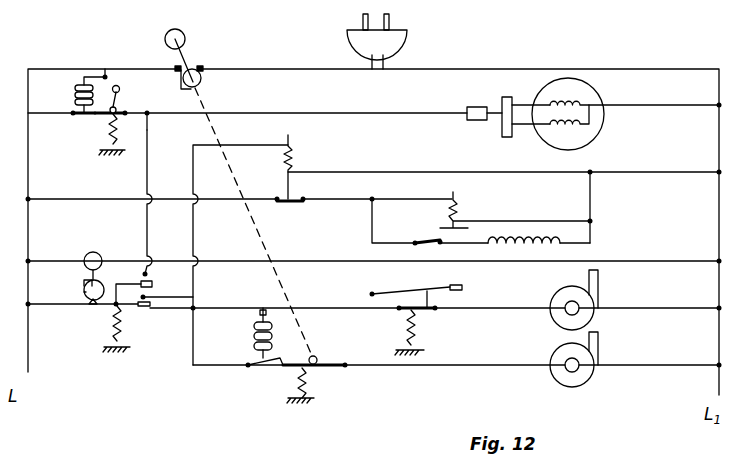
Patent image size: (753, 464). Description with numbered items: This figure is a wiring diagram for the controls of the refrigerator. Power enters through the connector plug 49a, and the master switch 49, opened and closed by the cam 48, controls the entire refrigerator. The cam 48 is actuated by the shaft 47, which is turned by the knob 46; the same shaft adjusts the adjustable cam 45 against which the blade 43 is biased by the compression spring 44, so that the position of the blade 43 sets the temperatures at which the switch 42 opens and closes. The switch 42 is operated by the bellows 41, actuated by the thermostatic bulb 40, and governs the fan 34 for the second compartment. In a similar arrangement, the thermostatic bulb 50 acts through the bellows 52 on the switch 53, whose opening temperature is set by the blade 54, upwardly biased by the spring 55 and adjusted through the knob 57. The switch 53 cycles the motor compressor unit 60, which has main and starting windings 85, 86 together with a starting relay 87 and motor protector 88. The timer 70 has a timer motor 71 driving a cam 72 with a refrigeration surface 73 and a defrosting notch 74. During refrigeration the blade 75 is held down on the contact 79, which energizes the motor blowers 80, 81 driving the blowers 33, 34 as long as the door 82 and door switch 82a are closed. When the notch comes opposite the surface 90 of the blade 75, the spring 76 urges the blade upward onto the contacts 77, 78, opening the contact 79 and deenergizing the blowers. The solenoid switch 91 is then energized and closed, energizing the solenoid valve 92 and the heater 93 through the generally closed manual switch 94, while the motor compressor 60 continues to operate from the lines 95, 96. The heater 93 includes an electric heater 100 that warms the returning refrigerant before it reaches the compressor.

The first fan 33 is at (600, 300).
The fan 34 is at (600, 355).
The thermostatic bulb 40 is at (260, 316).
The bellows 41 is at (254, 345).
The switch 42 is at (272, 362).
The blade 43 is at (333, 368).
The compression spring 44 is at (310, 396).
The adjustable cam 45 is at (318, 358).
The knob 46 is at (165, 39).
The shaft 47 is at (264, 246).
The cam 48 is at (201, 78).
The master switch 49 is at (190, 67).
The connector plug 49a is at (395, 34).
The thermostatic bulb 50 is at (105, 76).
The bellows 52 is at (74, 95).
The switch 53 is at (90, 116).
The blade 54 is at (116, 118).
The spring 55 is at (110, 143).
The knob 57 is at (120, 88).
The motor compressor unit 60 is at (600, 95).
The timer 70 is at (87, 271).
The timer motor 71 is at (100, 254).
The cam 72 is at (101, 283).
The refrigeration surface 73 is at (84, 292).
The defrosting notch 74 is at (84, 283).
The blade 75 is at (128, 308).
The spring 76 is at (112, 330).
The contact 77 is at (146, 297).
The contact 78 is at (146, 272).
The contact 79 is at (146, 308).
The motor blower 80 is at (560, 316).
The motor blower 81 is at (564, 376).
The door 82 is at (394, 292).
The door switch 82a is at (420, 312).
The main winding 85 is at (556, 102).
The starting winding 86 is at (570, 128).
The starting relay 87 is at (508, 138).
The motor protector 88 is at (478, 121).
The surface 90 is at (92, 306).
The solenoid switch 91 is at (298, 198).
The solenoid valve 92 is at (455, 226).
The heater 93 is at (512, 235).
The manual switch 94 is at (428, 240).
The line 95 is at (146, 179).
The line 96 is at (140, 116).
The electric heater 100 is at (575, 246).